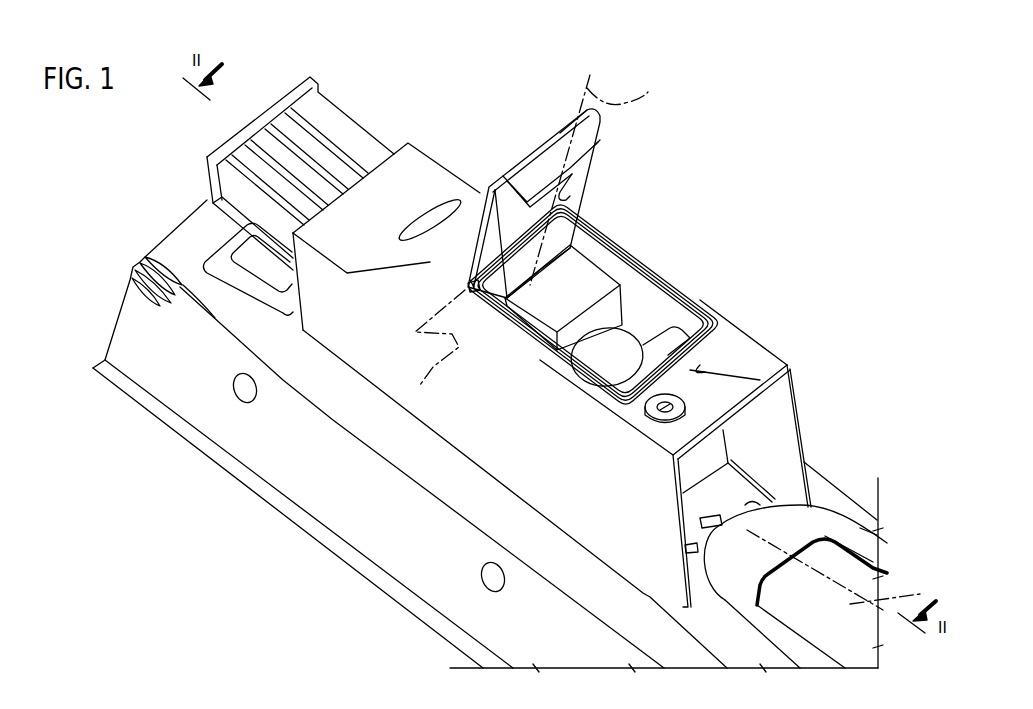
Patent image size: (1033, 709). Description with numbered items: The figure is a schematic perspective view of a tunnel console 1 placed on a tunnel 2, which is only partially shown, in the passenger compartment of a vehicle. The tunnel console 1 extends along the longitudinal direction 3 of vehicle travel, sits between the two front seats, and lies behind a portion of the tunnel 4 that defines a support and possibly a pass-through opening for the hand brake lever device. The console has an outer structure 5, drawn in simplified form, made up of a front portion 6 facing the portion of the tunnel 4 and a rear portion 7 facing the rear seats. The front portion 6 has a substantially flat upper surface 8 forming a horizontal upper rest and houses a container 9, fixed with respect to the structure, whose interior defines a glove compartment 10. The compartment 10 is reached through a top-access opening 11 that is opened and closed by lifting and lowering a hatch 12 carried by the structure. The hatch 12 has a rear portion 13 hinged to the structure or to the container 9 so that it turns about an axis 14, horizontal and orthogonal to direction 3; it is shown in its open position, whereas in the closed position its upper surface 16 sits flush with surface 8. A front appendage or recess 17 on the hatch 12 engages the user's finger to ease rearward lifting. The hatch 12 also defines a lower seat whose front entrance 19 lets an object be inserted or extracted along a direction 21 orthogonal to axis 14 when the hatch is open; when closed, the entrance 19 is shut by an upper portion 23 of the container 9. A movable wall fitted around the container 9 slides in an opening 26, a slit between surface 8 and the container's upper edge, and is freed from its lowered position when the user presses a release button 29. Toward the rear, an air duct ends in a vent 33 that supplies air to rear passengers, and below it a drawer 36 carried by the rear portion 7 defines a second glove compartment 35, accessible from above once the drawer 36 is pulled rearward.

The tunnel console 1 is at (796, 189).
The tunnel 2 is at (857, 490).
The longitudinal direction 3 is at (920, 594).
The portion of the tunnel 4 is at (867, 548).
The outer structure 5 is at (805, 400).
The front portion 6 is at (768, 348).
The rear portion 7 is at (428, 155).
The upper surface 8 is at (773, 337).
The container 9 is at (685, 318).
The glove compartment 10 is at (700, 325).
The top-access opening 11 is at (650, 266).
The hatch 12 is at (598, 174).
The rear portion of the hatch 13 is at (455, 276).
The axis 14 is at (440, 341).
The upper surface of the hatch 16 is at (565, 114).
The front appendage or recess 17 is at (535, 145).
The front entrance 19 is at (593, 145).
The insertion/extraction direction 21 is at (650, 97).
The upper portion of the container 23 is at (741, 350).
The opening 26 is at (705, 358).
The release button 29 is at (655, 415).
The vent 33 is at (434, 215).
The glove compartment 35 is at (345, 145).
The drawer 36 is at (310, 90).